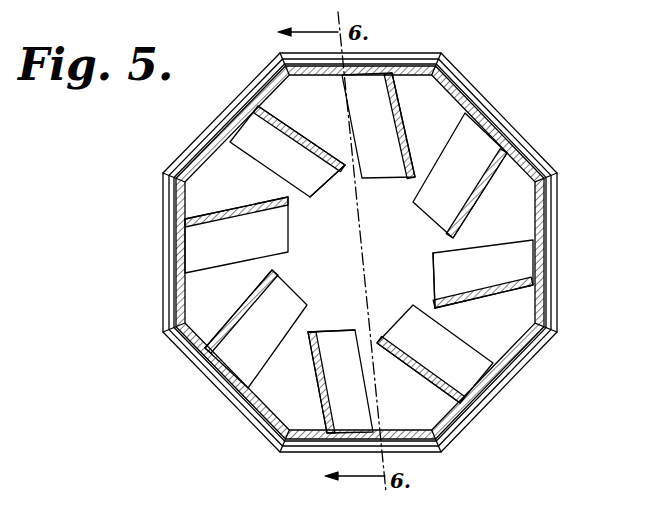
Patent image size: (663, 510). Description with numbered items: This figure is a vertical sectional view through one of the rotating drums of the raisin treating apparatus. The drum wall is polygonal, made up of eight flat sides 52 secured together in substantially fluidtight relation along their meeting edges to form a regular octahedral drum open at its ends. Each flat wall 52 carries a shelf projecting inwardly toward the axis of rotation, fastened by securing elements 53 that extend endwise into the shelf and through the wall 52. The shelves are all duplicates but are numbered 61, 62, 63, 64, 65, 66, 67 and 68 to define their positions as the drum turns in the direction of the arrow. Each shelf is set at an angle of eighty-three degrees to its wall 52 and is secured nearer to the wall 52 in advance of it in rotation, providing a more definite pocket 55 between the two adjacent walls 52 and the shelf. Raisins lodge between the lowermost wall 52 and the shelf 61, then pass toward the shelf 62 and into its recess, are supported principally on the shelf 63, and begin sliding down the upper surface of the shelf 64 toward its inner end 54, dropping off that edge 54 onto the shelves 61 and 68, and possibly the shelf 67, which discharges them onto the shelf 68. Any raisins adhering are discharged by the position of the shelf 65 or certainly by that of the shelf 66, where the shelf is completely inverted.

The flat side 52 is at (265, 84).
The securing element 53 is at (210, 218).
The inner end 54 is at (347, 170).
The pocket 55 is at (524, 313).
The shelf 61 is at (317, 388).
The shelf 62 is at (205, 350).
The shelf 63 is at (207, 212).
The shelf 64 is at (282, 130).
The shelf 65 is at (407, 97).
The shelf 66 is at (485, 190).
The shelf 67 is at (517, 297).
The shelf 68 is at (473, 378).